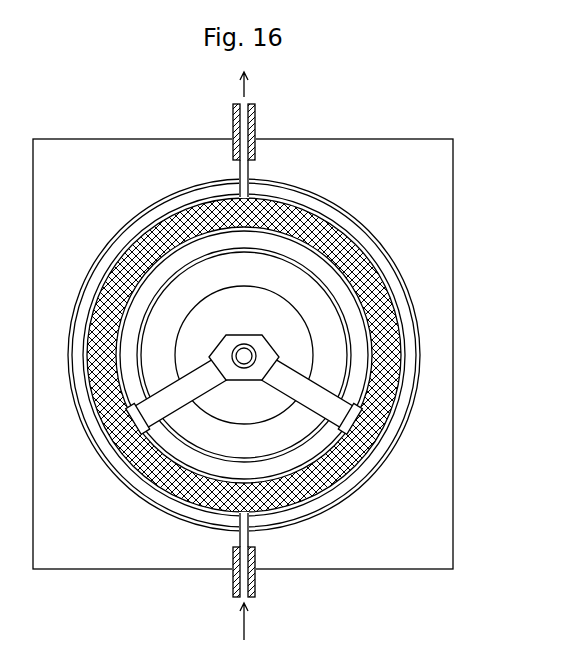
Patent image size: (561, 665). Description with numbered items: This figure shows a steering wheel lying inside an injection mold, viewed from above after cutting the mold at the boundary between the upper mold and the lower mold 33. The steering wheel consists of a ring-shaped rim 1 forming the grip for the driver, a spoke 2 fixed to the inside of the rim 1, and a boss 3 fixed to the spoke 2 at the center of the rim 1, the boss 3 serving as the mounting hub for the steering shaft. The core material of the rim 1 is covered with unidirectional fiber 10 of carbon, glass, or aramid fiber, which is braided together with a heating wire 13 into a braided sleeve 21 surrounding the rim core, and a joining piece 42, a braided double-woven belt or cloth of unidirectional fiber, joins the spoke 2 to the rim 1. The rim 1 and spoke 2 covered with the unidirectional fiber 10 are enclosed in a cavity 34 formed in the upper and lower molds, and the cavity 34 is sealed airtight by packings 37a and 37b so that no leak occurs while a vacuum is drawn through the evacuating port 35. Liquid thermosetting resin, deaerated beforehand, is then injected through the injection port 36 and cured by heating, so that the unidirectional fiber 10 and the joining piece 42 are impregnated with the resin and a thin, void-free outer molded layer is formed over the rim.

The rim 1 is at (395, 285).
The spoke 2 is at (305, 392).
The boss 3 is at (256, 352).
The unidirectional fiber 10 is at (398, 400).
The heating wire 13 is at (107, 445).
The braided sleeve 21 is at (385, 392).
The lower mold 33 is at (422, 528).
The cavity 34 is at (373, 242).
The evacuating port 35 is at (256, 106).
The injection port 36 is at (233, 577).
The packing 37a is at (340, 502).
The packing 37b is at (312, 500).
The joining piece 42 is at (380, 427).